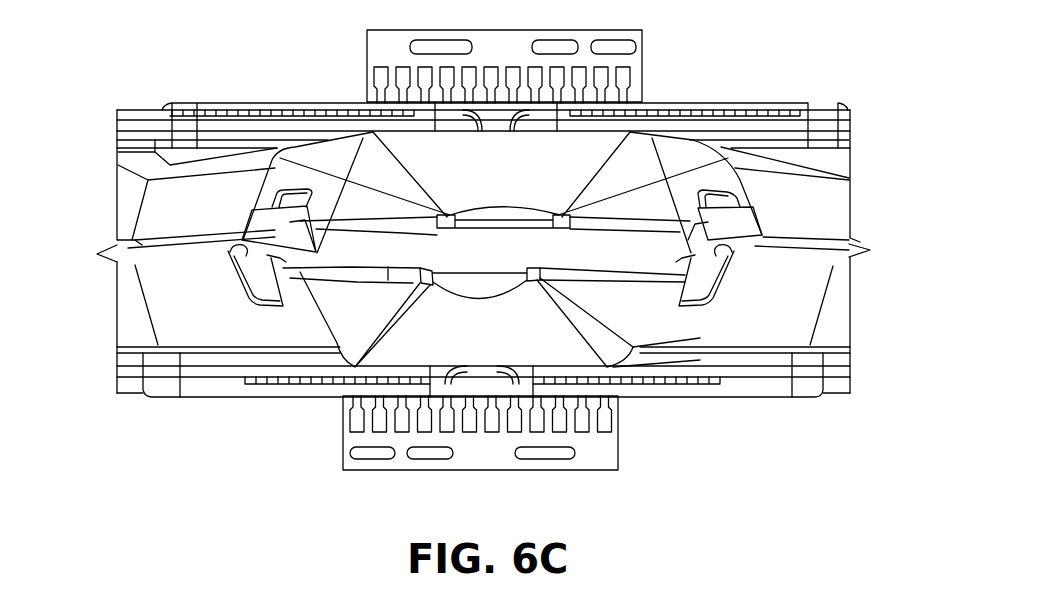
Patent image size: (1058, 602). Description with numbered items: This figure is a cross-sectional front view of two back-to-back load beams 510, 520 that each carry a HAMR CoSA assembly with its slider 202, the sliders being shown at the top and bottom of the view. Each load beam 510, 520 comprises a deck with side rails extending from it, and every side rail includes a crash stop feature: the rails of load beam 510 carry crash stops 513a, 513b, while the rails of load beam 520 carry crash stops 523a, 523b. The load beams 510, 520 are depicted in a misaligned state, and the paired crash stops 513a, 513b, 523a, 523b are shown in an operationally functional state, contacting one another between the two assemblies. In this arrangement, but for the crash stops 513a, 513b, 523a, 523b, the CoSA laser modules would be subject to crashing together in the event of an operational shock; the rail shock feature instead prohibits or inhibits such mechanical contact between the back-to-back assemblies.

The slider 202 is at (378, 47).
The load beam 510 is at (136, 266).
The load beam 520 is at (124, 200).
The crash stop 513a is at (724, 248).
The crash stop 513b is at (245, 248).
The crash stop 523a is at (273, 222).
The crash stop 523b is at (725, 232).